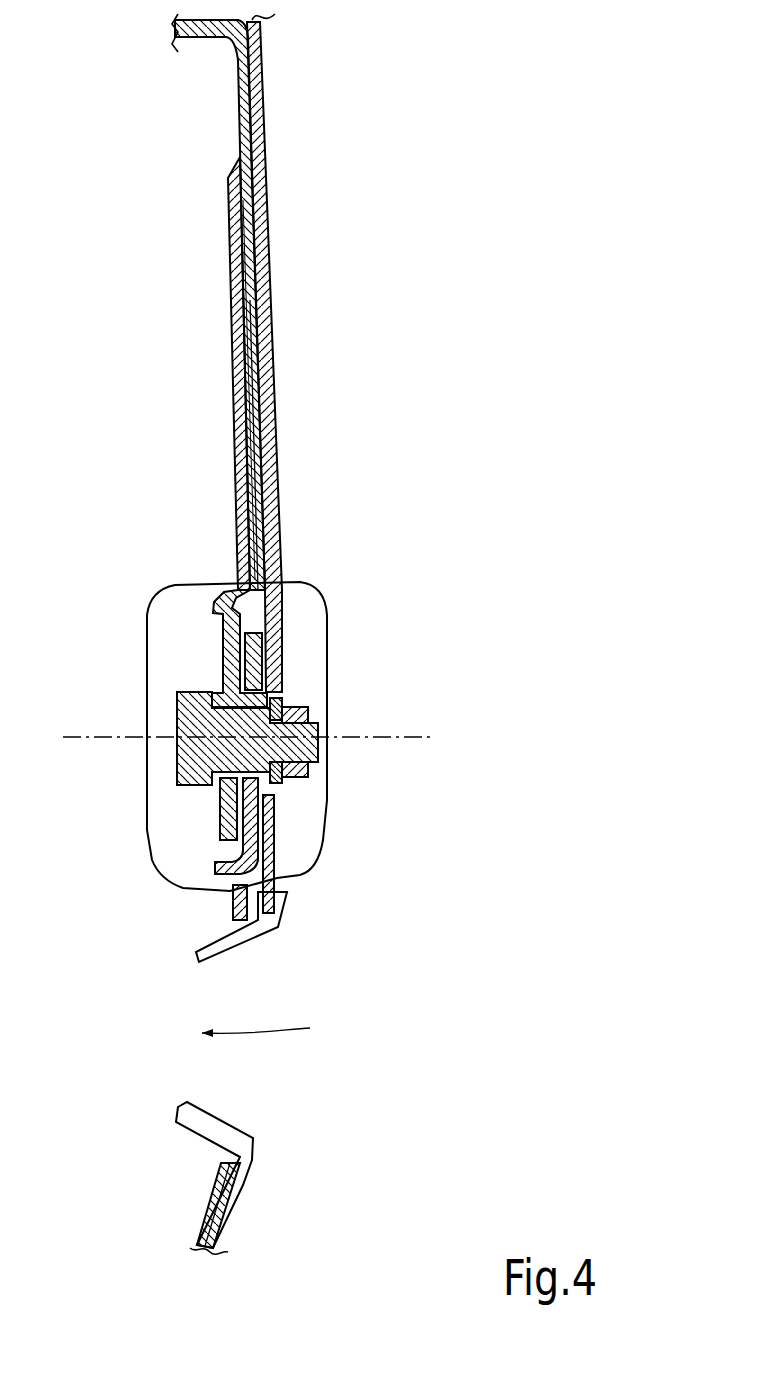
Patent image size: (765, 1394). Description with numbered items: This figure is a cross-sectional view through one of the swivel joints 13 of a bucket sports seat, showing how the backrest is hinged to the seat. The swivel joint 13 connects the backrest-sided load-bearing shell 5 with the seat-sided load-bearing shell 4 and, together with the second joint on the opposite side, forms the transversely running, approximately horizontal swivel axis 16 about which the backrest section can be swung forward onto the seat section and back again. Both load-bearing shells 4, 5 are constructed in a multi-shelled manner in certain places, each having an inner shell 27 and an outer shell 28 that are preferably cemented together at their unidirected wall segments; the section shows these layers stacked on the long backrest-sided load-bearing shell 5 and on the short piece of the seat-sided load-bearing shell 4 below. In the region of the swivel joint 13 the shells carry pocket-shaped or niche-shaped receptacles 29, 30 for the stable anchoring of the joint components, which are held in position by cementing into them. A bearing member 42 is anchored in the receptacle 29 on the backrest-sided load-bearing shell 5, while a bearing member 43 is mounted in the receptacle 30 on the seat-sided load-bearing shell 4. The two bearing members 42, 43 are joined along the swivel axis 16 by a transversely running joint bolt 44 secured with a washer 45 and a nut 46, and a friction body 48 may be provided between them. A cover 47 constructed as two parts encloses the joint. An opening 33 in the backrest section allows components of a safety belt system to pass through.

The seat-sided load-bearing shell 4 is at (263, 1137).
The backrest-sided load-bearing shell 5 is at (265, 90).
The swivel joint 13 is at (135, 752).
The swivel axis 16 is at (333, 743).
The inner shell 27 is at (238, 415).
The outer shell 28 is at (263, 370).
The receptacle 29 is at (255, 463).
The receptacle 30 is at (293, 885).
The opening 33 is at (276, 1028).
The bearing member 42 is at (257, 287).
The bearing member 43 is at (250, 655).
The joint bolt 44 is at (177, 708).
The washer 45 is at (275, 698).
The nut 46 is at (305, 715).
The cover 47 is at (327, 807).
The friction body 48 is at (225, 682).